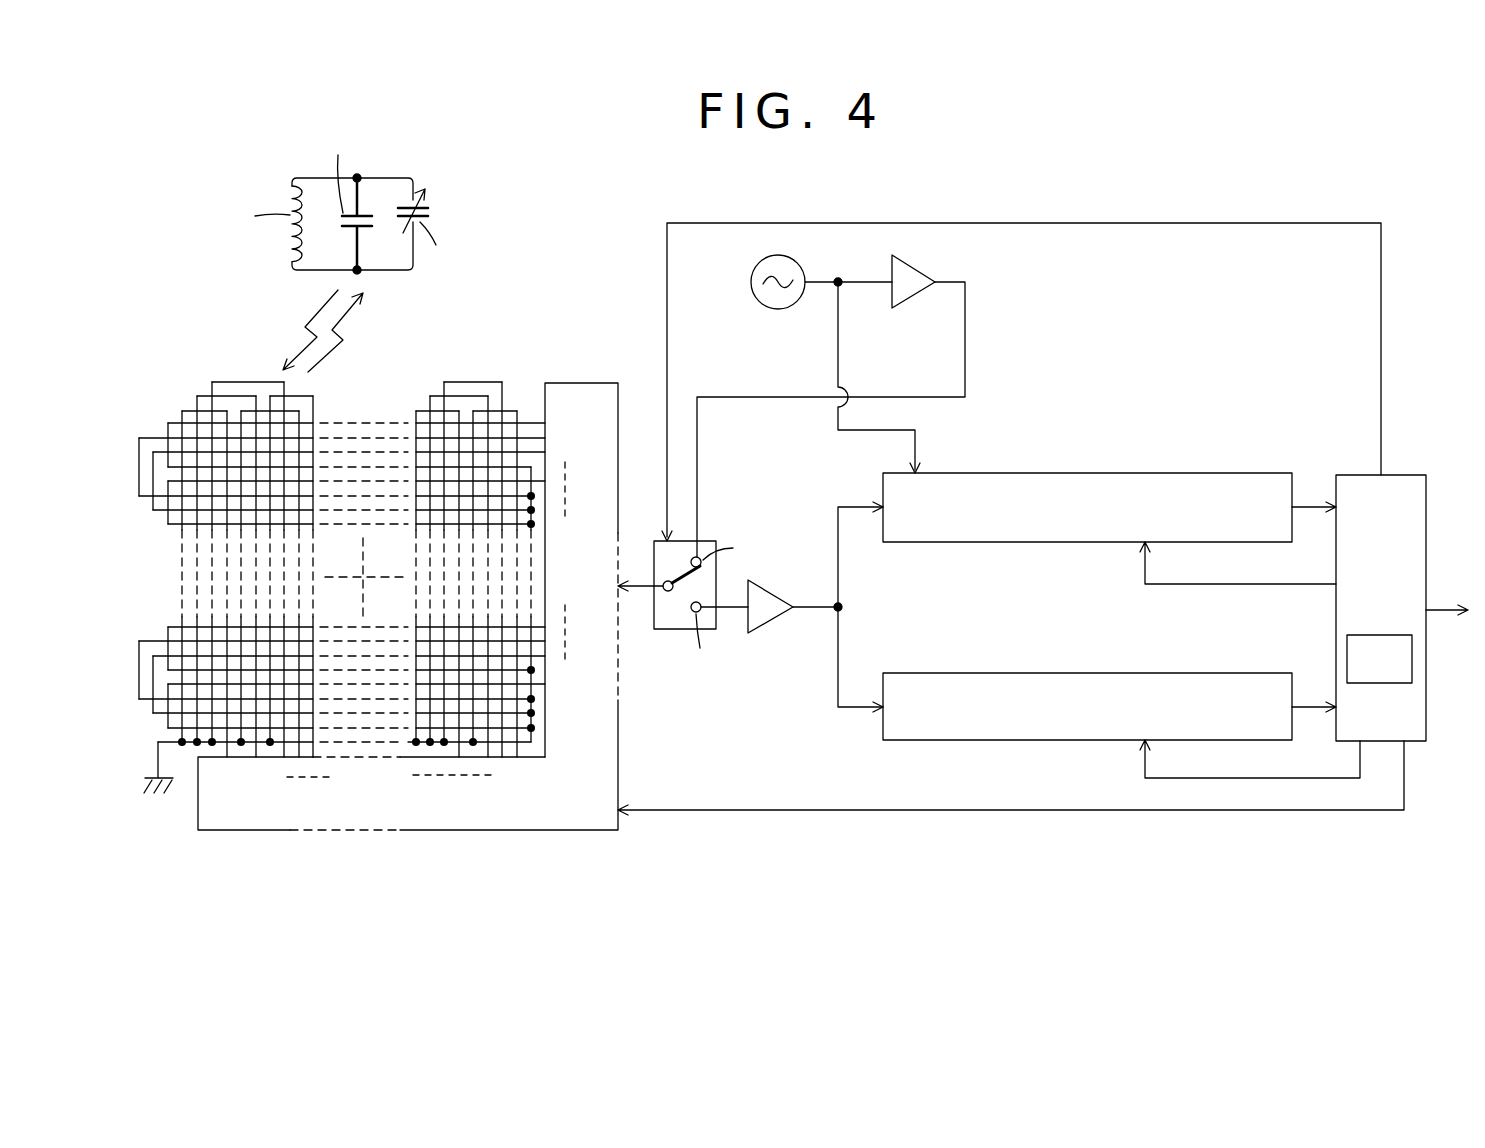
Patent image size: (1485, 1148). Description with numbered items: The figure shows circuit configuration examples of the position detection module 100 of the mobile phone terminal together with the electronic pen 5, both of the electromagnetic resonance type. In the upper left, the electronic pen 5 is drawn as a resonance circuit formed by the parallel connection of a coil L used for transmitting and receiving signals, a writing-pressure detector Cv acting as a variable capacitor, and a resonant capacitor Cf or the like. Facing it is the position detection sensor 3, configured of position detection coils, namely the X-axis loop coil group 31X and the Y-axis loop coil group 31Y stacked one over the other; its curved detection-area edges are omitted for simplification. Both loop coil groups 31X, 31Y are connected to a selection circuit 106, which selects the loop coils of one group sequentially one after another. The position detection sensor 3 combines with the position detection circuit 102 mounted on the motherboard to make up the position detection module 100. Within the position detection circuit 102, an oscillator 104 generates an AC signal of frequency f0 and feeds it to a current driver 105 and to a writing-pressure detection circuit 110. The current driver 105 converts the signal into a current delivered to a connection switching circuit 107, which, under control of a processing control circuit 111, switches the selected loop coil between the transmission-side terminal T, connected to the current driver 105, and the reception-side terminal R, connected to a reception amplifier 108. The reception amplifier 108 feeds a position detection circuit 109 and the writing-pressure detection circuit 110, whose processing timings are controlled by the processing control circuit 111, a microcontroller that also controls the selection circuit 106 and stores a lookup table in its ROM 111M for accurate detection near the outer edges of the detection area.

The electronic pen 5 is at (230, 156).
The position detection sensor 3 is at (163, 385).
The X-axis loop coil group 31X is at (457, 382).
The Y-axis loop coil group 31Y is at (140, 654).
The selection circuit 106 is at (559, 383).
The position detection module 100 is at (780, 828).
The position detection circuit 102 is at (1124, 384).
The oscillator 104 is at (778, 309).
The current driver 105 is at (913, 292).
The connection switching circuit 107 is at (667, 631).
The reception amplifier 108 is at (770, 622).
The position detection circuit 109 is at (1036, 673).
The writing-pressure detection circuit 110 is at (1103, 473).
The processing control circuit 111 is at (1418, 475).
The read only memory (ROM) 111M is at (1357, 683).